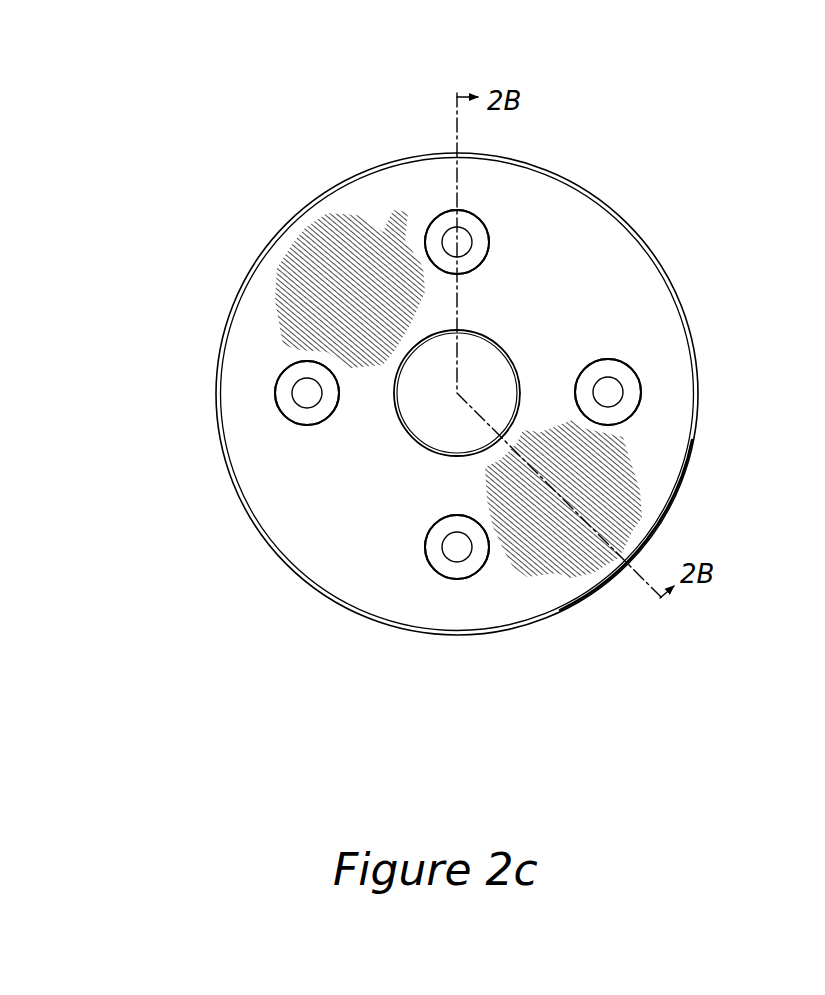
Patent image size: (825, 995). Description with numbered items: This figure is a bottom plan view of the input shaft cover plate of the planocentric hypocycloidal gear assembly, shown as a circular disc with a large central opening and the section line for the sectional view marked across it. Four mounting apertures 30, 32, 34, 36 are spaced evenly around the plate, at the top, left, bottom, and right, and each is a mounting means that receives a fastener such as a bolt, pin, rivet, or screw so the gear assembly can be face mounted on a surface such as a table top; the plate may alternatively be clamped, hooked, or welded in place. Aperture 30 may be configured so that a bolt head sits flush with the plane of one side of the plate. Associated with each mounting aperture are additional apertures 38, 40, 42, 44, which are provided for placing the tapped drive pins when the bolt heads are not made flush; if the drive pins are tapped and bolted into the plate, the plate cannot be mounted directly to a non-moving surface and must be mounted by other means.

The aperture 30 is at (457, 242).
The aperture 32 is at (307, 393).
The aperture 34 is at (457, 547).
The aperture 36 is at (608, 392).
The additional aperture 38 is at (425, 245).
The additional aperture 40 is at (310, 427).
The additional aperture 42 is at (427, 543).
The additional aperture 44 is at (600, 362).